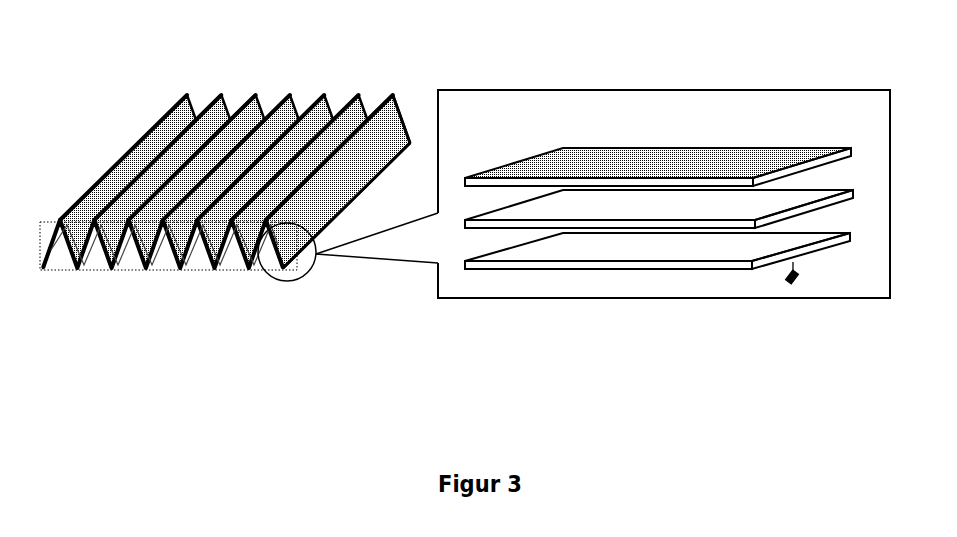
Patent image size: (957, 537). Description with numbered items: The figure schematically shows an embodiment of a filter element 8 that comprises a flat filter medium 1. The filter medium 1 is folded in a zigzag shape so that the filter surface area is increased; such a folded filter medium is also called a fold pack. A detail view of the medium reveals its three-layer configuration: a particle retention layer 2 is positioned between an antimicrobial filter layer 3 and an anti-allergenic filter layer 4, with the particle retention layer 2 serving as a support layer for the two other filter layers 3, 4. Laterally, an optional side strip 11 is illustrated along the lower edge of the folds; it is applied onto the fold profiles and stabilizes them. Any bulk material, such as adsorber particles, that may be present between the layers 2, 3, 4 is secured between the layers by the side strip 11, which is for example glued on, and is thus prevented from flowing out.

The filter medium 1 is at (358, 97).
The particle retention layer 2 is at (800, 215).
The antimicrobial filter layer 3 is at (649, 163).
The anti-allergenic filter layer 4 is at (789, 285).
The filter element 8 is at (123, 123).
The side strip 11 is at (200, 273).